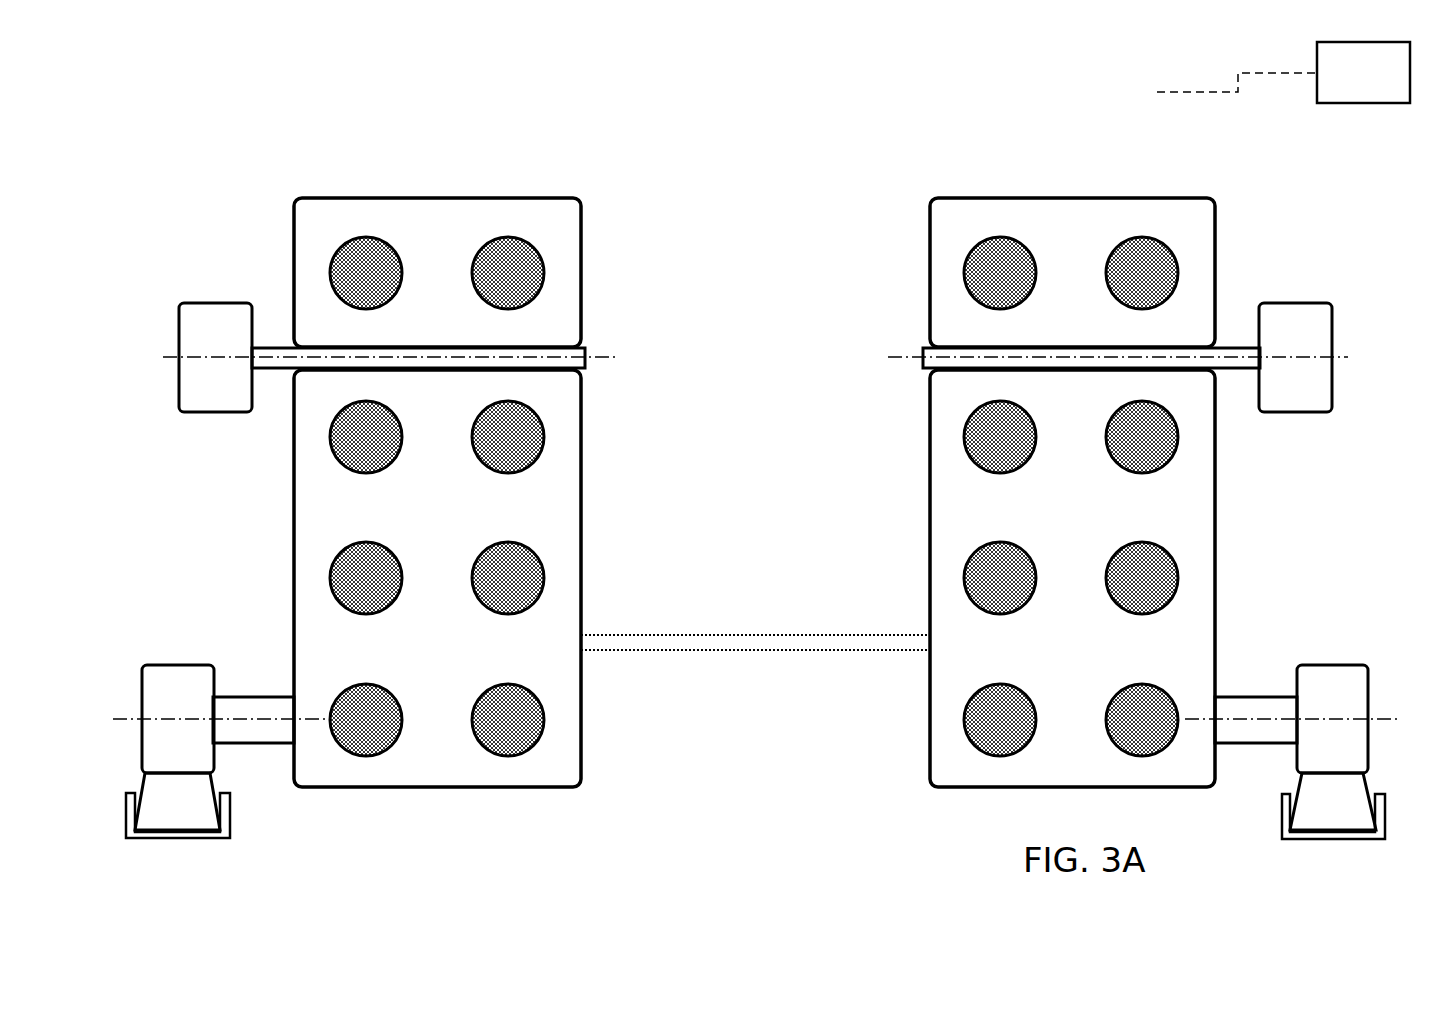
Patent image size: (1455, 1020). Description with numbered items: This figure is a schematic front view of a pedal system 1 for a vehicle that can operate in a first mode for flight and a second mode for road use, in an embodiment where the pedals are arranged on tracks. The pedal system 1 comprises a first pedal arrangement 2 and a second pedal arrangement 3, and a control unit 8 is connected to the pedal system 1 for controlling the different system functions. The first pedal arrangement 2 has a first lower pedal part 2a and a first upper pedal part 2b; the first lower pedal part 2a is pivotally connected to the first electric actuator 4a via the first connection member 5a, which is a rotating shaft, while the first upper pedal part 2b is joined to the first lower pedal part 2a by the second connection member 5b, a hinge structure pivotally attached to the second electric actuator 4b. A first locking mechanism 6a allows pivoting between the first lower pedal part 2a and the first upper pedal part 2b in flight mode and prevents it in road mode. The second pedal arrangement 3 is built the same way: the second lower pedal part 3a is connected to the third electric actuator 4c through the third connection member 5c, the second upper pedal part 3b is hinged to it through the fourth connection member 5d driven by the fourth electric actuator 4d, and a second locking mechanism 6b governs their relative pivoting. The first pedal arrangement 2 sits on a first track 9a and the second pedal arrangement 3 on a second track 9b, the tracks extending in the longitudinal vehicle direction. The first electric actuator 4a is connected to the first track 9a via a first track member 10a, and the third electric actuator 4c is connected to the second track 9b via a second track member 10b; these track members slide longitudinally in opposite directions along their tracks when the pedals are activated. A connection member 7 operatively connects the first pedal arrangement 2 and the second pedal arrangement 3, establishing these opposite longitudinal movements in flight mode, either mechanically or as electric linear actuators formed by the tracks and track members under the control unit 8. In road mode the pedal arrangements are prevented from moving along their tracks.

The pedal system 1 is at (957, 107).
The first pedal arrangement 2 is at (1252, 188).
The second pedal arrangement 3 is at (250, 190).
The first lower pedal part 2a is at (960, 683).
The first upper pedal part 2b is at (947, 238).
The second lower pedal part 3a is at (558, 688).
The second upper pedal part 3b is at (568, 238).
The first electric actuator 4a is at (1353, 698).
The second electric actuator 4b is at (1305, 333).
The third electric actuator 4c is at (152, 698).
The fourth electric actuator 4d is at (190, 315).
The first connection member 5a is at (1243, 703).
The second connection member 5b is at (923, 347).
The third connection member 5c is at (270, 703).
The fourth connection member 5d is at (585, 347).
The first locking mechanism 6a is at (885, 353).
The second locking mechanism 6b is at (632, 353).
The connection member 7 is at (765, 643).
The control unit 8 is at (1357, 93).
The first track 9a is at (1285, 808).
The second track 9b is at (230, 810).
The first track member 10a is at (1368, 820).
The second track member 10b is at (172, 818).